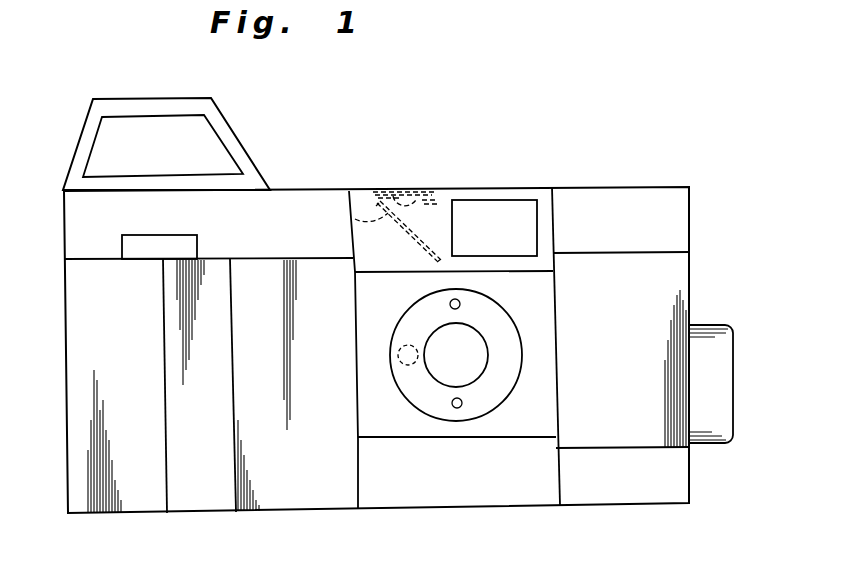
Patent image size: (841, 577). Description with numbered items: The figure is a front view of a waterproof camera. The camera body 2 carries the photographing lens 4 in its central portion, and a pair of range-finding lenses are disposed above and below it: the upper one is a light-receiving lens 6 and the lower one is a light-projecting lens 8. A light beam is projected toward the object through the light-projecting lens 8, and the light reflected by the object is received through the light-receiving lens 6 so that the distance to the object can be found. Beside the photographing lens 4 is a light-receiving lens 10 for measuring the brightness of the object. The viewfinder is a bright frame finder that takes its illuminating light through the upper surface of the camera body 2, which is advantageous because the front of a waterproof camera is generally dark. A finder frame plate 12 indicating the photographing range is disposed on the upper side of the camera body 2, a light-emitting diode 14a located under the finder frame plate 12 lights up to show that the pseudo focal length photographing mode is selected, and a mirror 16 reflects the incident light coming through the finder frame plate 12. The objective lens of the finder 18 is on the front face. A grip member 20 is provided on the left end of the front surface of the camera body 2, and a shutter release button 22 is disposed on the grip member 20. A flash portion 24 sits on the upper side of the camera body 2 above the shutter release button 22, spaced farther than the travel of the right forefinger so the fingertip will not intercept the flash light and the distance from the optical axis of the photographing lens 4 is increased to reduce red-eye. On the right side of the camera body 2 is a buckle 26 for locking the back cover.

The camera body 2 is at (640, 186).
The photographing lens 4 is at (442, 370).
The light-receiving lens 6 is at (460, 303).
The light-projecting lens 8 is at (457, 408).
The light-receiving lens for measuring brightness 10 is at (398, 357).
The finder frame plate 12 is at (450, 188).
The light-emitting diode 14a is at (398, 190).
The mirror 16 is at (352, 218).
The objective lens of the finder 18 is at (520, 210).
The grip member 20 is at (75, 448).
The shutter release button 22 is at (140, 245).
The flash portion 24 is at (158, 128).
The buckle 26 is at (722, 388).